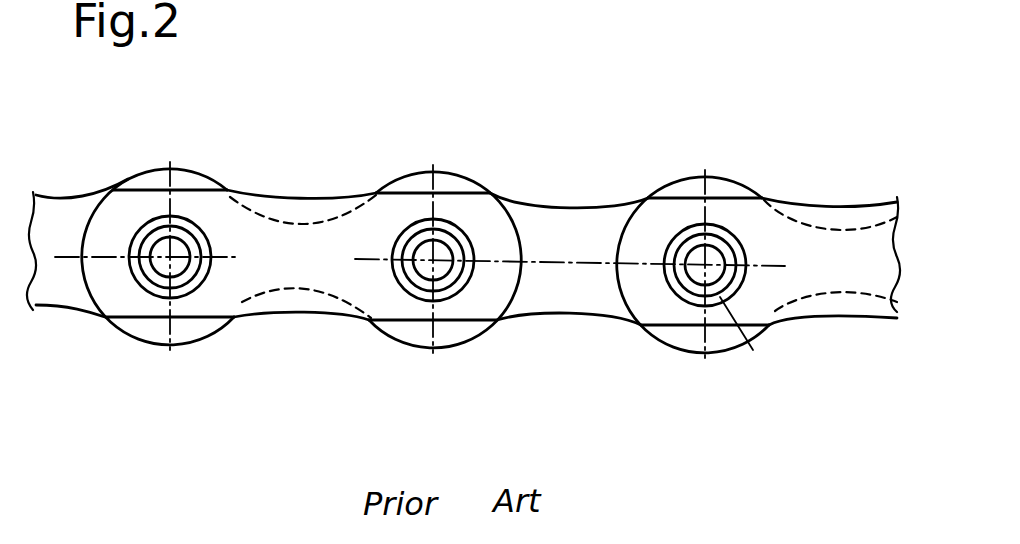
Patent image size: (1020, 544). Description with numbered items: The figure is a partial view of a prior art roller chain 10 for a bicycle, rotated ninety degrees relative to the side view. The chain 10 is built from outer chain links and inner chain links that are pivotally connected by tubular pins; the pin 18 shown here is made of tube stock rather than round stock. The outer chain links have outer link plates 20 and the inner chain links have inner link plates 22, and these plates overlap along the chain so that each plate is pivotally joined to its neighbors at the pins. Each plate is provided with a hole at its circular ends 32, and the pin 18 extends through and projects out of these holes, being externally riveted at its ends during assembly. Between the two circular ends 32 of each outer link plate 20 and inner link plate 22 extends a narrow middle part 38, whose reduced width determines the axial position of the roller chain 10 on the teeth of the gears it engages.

The roller chain 10 is at (768, 96).
The pin 18 is at (452, 226).
The outer link plate 20 is at (233, 287).
The inner link plate 22 is at (547, 287).
The circular end 32 is at (692, 213).
The narrow middle part 38 is at (310, 242).